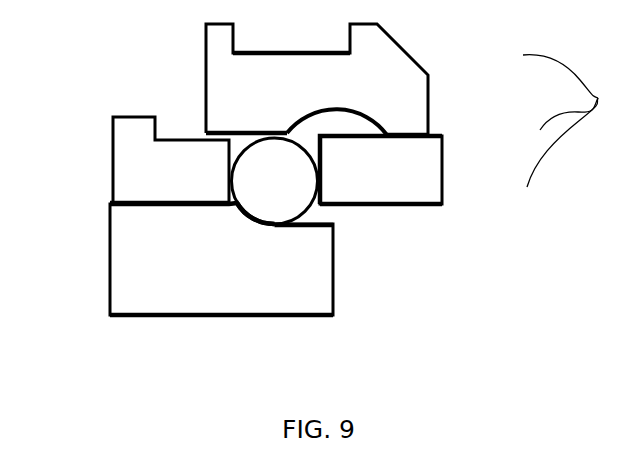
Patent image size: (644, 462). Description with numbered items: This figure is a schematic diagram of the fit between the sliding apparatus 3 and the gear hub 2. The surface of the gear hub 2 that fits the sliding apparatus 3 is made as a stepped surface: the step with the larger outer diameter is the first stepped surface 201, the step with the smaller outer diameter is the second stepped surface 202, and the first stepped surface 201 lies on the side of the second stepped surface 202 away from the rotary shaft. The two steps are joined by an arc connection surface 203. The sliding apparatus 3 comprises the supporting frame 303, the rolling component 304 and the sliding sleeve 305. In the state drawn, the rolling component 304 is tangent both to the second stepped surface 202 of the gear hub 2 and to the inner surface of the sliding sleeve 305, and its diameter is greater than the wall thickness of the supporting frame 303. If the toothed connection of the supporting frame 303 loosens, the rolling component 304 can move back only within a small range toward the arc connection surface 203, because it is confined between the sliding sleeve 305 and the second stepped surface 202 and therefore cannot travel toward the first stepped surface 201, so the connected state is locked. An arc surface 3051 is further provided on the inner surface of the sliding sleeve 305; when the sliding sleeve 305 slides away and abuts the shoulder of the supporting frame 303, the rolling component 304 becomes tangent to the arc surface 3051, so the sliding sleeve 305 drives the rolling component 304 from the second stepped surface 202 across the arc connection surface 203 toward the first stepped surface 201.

The gear hub 2 is at (283, 271).
The first stepped surface 201 is at (153, 205).
The second stepped surface 202 is at (333, 227).
The arc connection surface 203 is at (252, 227).
The sliding apparatus 3 is at (570, 121).
The supporting frame 303 is at (410, 153).
The rolling component 304 is at (260, 174).
The sliding sleeve 305 is at (382, 77).
The arc surface 3051 is at (313, 116).